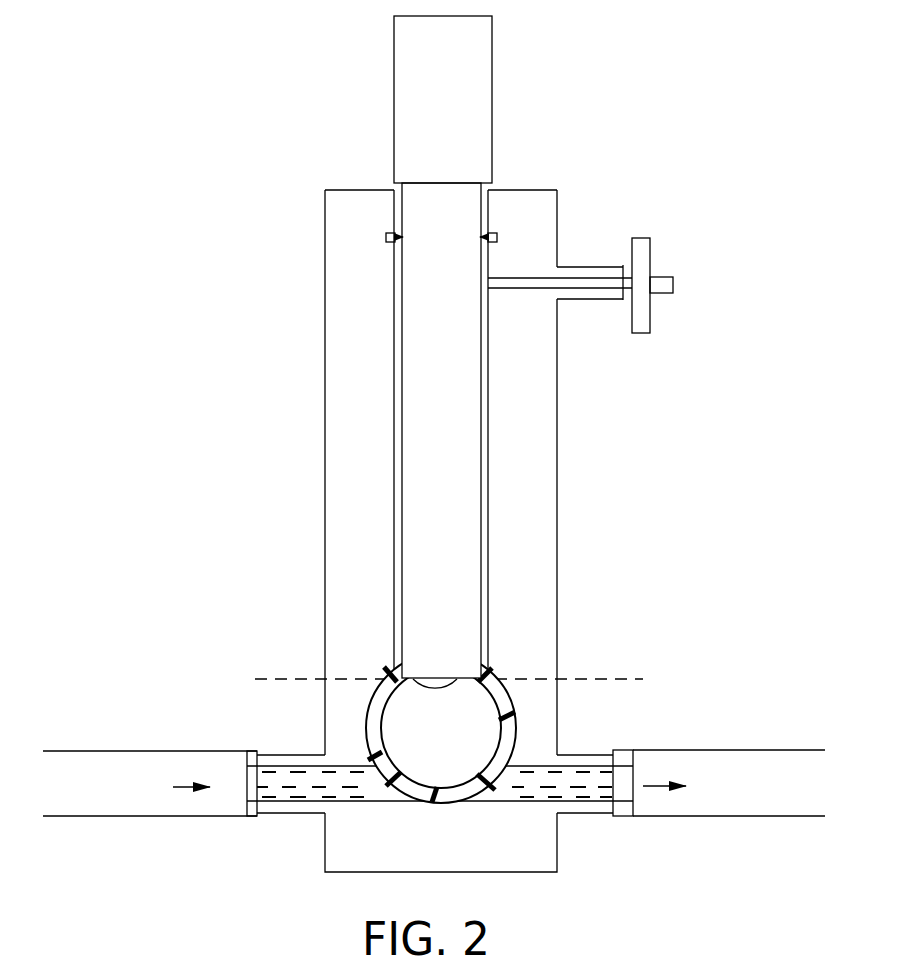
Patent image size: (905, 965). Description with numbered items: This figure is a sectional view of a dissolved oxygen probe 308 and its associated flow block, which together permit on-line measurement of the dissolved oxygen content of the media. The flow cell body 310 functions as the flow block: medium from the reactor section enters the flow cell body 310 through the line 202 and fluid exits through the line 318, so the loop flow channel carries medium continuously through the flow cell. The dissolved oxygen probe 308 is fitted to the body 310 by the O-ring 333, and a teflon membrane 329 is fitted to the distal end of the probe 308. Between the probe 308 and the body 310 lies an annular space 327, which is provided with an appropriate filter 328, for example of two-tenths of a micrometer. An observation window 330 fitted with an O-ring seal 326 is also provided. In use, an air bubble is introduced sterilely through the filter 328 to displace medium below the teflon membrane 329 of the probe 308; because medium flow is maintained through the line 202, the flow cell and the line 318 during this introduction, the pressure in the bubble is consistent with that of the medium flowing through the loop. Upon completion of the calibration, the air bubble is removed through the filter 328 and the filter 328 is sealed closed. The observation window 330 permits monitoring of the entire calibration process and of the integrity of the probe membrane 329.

The line 202 is at (148, 816).
The dissolved oxygen probe 308 is at (410, 99).
The flow cell body 310 is at (325, 470).
The line 318 is at (735, 818).
The O-ring seal 326 is at (535, 711).
The annular space 327 is at (483, 415).
The filter 328 is at (673, 287).
The teflon membrane 329 is at (400, 690).
The observation window 330 is at (414, 758).
The O-ring 333 is at (399, 232).